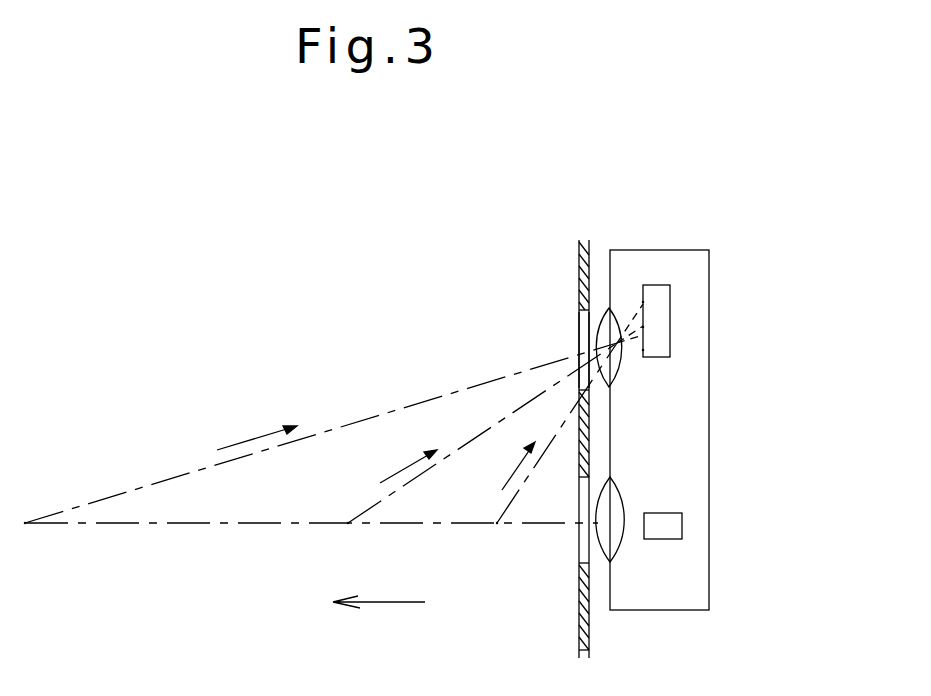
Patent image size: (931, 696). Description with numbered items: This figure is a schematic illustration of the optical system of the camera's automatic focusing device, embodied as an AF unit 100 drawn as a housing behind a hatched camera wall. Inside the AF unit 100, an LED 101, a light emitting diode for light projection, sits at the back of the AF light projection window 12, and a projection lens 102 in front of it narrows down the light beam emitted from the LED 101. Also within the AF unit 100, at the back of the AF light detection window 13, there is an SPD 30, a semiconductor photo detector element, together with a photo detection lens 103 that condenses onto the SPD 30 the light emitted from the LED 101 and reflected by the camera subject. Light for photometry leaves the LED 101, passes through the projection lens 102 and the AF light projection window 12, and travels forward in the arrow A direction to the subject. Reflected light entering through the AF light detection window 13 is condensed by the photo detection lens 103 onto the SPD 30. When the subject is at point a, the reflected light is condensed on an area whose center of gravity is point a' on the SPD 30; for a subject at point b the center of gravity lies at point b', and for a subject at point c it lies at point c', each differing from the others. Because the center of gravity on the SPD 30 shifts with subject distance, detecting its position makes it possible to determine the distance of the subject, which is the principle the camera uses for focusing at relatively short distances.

The AF light projection window 12 is at (578, 553).
The AF light detection window 13 is at (597, 346).
The SPD 30 is at (663, 285).
The AF unit 100 is at (710, 289).
The LED 101 is at (683, 525).
The projection lens 102 is at (623, 497).
The photo detection lens 103 is at (612, 386).
The point a is at (494, 540).
The point b is at (344, 540).
The point c is at (23, 540).
The point a' is at (589, 273).
The point b' is at (589, 305).
The point c' is at (705, 368).
The arrow A direction A is at (365, 602).